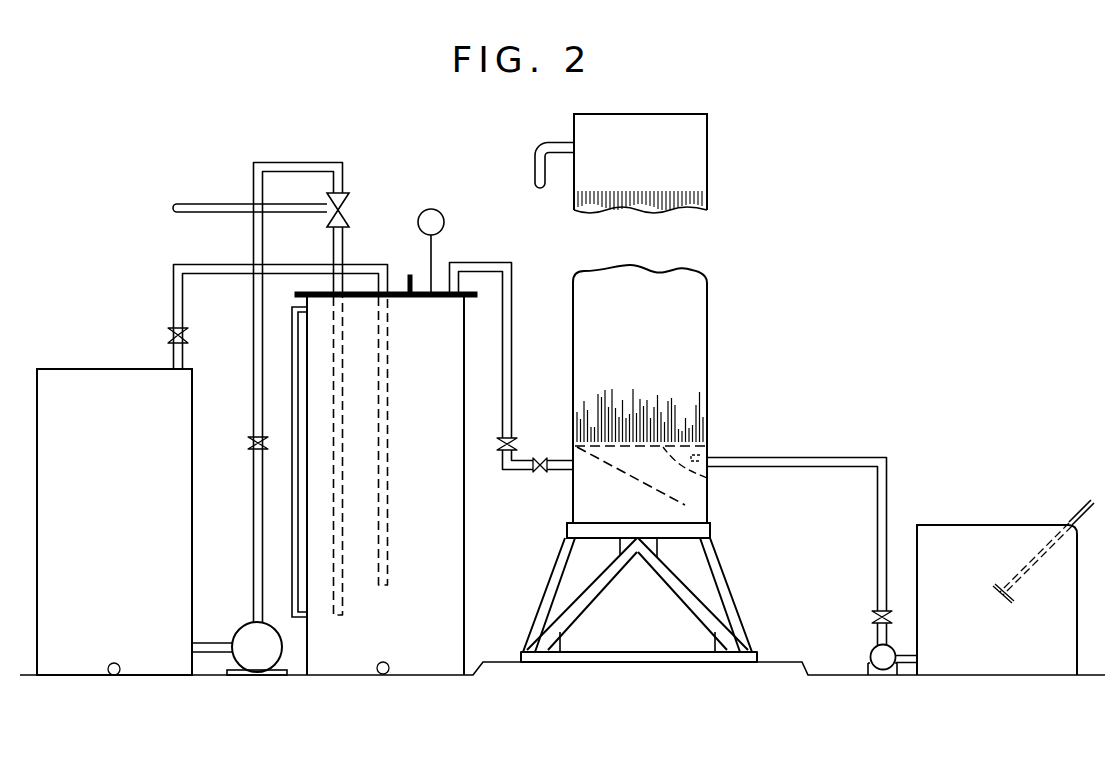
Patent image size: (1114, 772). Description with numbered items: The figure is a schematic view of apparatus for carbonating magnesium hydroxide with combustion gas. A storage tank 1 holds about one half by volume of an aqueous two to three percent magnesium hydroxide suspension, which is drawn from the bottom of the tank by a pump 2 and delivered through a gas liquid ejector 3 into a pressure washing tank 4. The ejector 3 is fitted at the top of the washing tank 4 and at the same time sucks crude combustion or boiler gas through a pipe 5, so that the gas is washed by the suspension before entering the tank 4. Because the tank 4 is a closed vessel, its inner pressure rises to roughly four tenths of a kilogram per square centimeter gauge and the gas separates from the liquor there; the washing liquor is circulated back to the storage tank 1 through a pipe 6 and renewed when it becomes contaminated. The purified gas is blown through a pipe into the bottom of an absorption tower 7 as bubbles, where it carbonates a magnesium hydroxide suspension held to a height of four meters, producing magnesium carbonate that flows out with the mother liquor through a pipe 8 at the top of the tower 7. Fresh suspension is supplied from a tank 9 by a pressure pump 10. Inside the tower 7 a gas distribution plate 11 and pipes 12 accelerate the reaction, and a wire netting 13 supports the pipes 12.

The storage tank 1 is at (86, 380).
The pump 2 is at (249, 635).
The gas liquid ejector 3 is at (346, 212).
The pressure washing tank 4 is at (312, 408).
The pipe 5 is at (290, 212).
The pipe 6 is at (382, 270).
The absorption tower 7 is at (580, 310).
The pipe 8 is at (553, 143).
The tank 9 is at (1077, 620).
The pressure pump 10 is at (871, 654).
The gas distribution plate 11 is at (592, 458).
The pipes 12 is at (708, 408).
The wire netting 13 is at (707, 478).